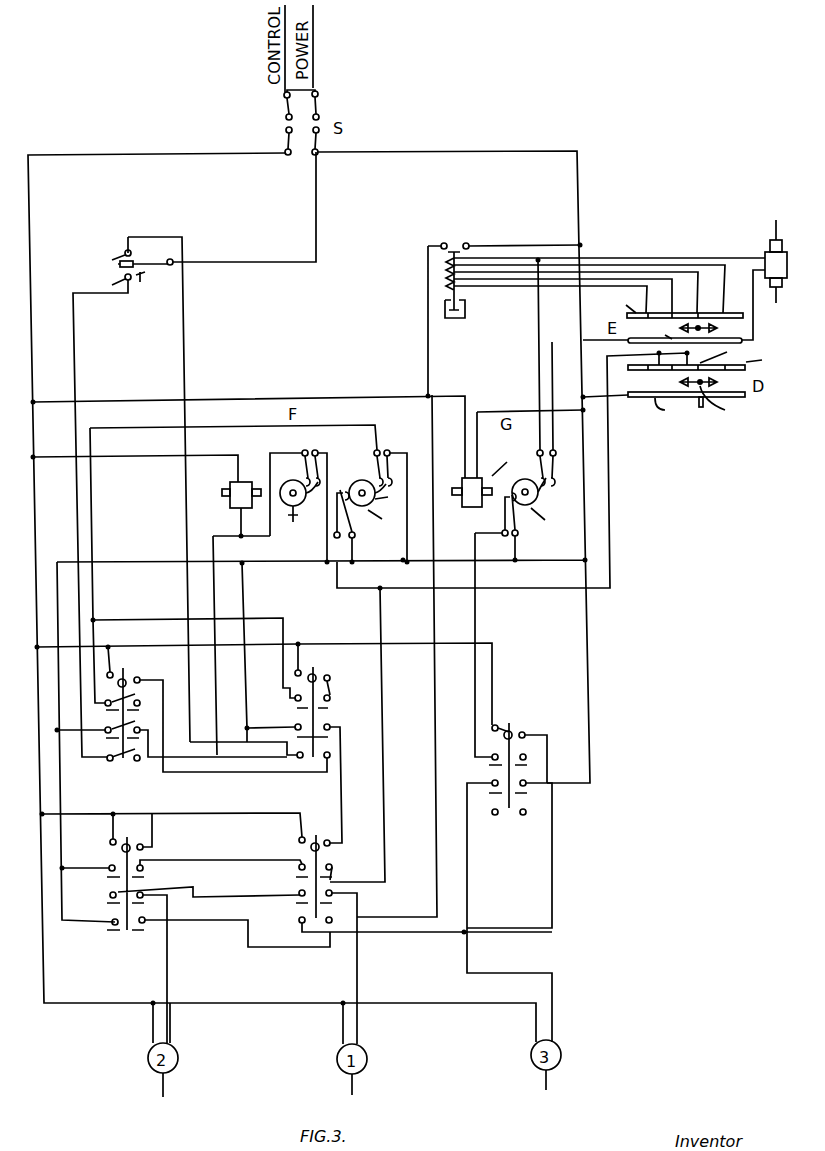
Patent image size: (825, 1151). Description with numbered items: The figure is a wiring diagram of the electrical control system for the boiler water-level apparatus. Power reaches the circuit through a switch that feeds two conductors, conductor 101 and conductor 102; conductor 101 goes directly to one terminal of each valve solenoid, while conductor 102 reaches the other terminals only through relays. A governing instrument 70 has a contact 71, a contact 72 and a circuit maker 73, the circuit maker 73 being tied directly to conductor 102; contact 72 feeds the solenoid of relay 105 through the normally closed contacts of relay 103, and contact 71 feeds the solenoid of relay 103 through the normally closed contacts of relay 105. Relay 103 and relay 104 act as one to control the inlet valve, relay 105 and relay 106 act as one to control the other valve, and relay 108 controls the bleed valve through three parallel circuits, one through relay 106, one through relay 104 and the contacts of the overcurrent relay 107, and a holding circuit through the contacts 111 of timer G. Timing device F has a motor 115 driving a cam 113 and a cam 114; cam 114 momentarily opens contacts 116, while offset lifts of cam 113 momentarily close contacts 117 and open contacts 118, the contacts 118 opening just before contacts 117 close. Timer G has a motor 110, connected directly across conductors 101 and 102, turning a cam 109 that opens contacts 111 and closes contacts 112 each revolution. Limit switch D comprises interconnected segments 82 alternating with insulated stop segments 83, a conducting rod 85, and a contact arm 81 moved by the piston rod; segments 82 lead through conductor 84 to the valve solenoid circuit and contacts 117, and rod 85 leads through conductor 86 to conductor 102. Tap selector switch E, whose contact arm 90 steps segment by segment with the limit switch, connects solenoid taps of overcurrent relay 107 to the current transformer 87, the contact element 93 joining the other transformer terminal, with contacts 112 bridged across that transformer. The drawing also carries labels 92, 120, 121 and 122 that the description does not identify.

The governing instrument 70 is at (217, 447).
The contact of governing instrument 71 is at (102, 514).
The contact of governing instrument 72 is at (113, 249).
The circuit maker 73 is at (151, 284).
The contact arm 81 is at (715, 398).
The segments 82 is at (705, 360).
The stop segments 83 is at (724, 352).
The conductor 84 is at (513, 471).
The conducting rod 85 is at (686, 405).
The conductor 86 is at (604, 386).
The current transformer 87 is at (776, 261).
The contact arm 90 is at (712, 328).
The commutator segments 92 is at (673, 304).
The contact element 93 is at (662, 331).
The conductor 101 is at (277, 588).
The conductor 102 is at (319, 525).
The relay 103 is at (273, 703).
The relay 104 is at (405, 719).
The relay 105 is at (192, 709).
The relay 106 is at (196, 928).
The overcurrent relay 107 is at (497, 319).
The relay 108 is at (502, 882).
The cam 109 is at (543, 504).
The motor 110 is at (517, 458).
The contacts 111 is at (496, 625).
The contacts 112 is at (556, 373).
The cam 113 is at (380, 491).
The cam 114 is at (299, 513).
The motor 115 is at (249, 604).
The contacts 116 is at (314, 489).
The contacts 117 is at (341, 506).
The contacts 118 is at (390, 489).
The conductor 120 is at (264, 730).
The conductor 121 is at (609, 274).
The conductor 122 is at (758, 305).